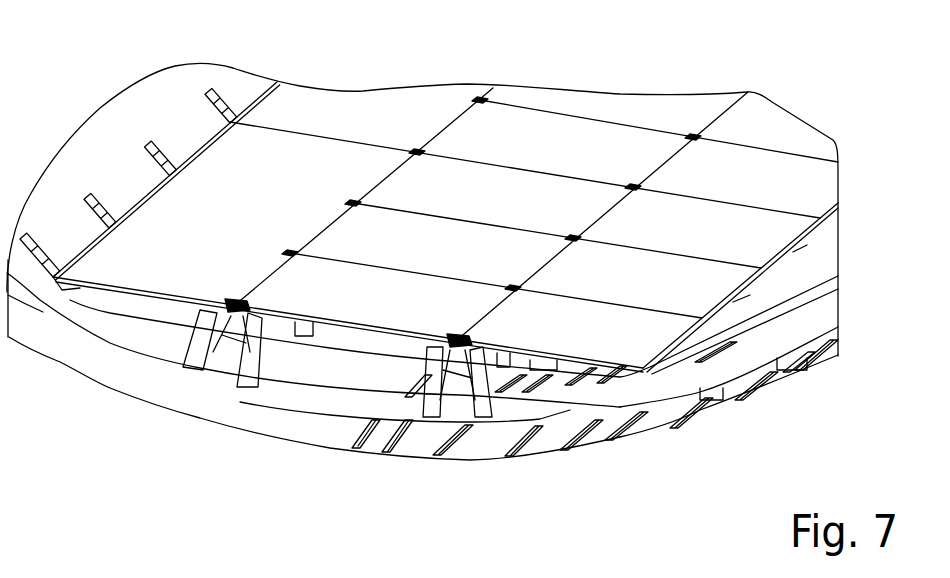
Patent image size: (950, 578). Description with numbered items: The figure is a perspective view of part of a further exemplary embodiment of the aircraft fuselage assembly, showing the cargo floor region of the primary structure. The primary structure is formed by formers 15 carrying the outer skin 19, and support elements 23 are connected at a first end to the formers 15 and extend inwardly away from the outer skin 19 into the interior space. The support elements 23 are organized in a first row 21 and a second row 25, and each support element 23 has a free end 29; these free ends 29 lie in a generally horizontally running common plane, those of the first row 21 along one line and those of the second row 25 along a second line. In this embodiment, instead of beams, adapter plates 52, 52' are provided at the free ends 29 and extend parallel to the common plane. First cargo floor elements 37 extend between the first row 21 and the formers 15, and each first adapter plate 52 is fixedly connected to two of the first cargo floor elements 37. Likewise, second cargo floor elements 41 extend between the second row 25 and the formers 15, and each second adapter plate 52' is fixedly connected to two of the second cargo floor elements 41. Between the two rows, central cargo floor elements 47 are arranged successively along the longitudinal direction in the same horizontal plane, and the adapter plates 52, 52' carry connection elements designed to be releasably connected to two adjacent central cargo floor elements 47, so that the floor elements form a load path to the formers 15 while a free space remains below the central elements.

The formers 15 is at (622, 400).
The outer skin 19 is at (67, 347).
The first row 21 is at (229, 347).
The support elements 23 is at (243, 350).
The second row 25 is at (462, 350).
The free end 29 is at (210, 367).
The first cargo floor elements 37 is at (167, 260).
The second cargo floor elements 41 is at (785, 130).
The central cargo floor elements 47 is at (509, 240).
The first adapter plates 52 is at (325, 158).
The second adapter plates 52' is at (690, 216).